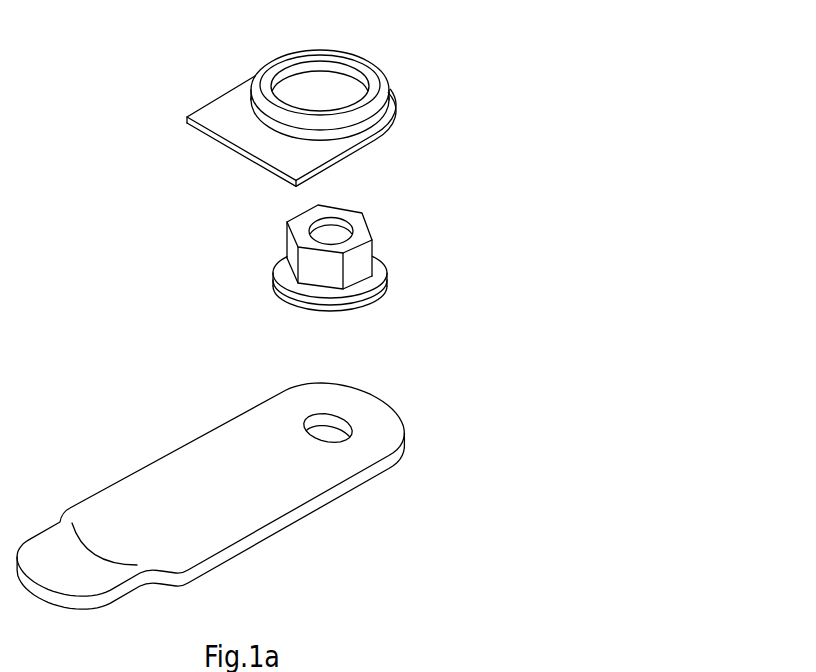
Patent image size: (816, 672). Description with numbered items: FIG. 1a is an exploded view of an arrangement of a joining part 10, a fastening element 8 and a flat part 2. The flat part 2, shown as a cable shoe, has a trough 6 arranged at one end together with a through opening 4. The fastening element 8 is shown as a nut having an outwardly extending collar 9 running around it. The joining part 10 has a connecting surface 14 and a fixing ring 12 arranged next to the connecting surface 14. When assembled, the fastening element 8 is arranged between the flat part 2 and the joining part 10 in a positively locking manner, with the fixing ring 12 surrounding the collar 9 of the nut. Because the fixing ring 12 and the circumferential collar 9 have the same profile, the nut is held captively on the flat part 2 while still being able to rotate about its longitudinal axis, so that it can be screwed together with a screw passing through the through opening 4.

The joining part 10 is at (405, 62).
The fixing ring 12 is at (268, 80).
The connecting surface 14 is at (218, 110).
The fastening element 8 is at (362, 233).
The collar 9 is at (373, 297).
The flat part 2 is at (160, 427).
The through opening 4 is at (330, 437).
The trough 6 is at (52, 545).